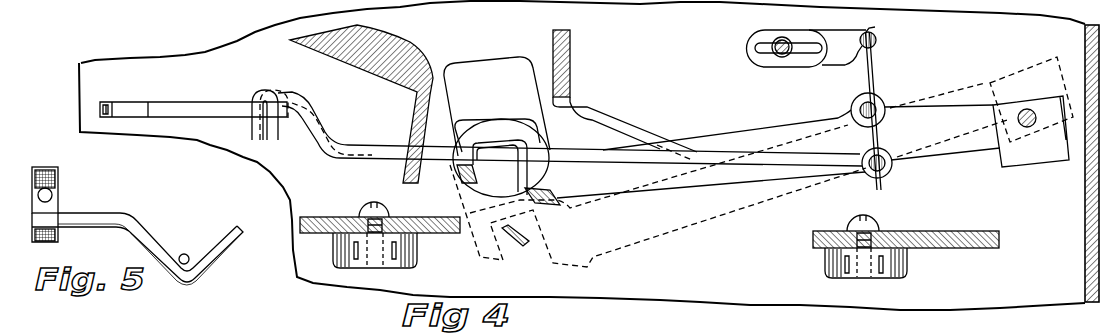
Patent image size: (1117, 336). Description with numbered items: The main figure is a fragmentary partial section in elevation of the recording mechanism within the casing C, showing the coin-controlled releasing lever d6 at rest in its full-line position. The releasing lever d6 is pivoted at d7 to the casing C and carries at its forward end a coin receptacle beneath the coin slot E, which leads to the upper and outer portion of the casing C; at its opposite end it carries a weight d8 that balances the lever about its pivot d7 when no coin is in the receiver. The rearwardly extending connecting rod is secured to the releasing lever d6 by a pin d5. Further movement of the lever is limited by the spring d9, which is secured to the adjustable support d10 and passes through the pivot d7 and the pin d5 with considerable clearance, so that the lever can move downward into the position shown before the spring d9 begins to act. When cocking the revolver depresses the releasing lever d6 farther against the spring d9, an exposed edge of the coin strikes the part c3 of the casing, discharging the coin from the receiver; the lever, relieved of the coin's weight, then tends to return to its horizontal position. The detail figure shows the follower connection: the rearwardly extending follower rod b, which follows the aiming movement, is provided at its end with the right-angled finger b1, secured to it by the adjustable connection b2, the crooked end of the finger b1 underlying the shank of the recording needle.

In FIG. 4, the coin slot E is at (502, 111).
In FIG. 4, the casing C is at (711, 128).
In FIG. 4, the part of the casing c3 is at (516, 241).
In FIG. 4, the pin d5 is at (886, 170).
In FIG. 4, the coin-controlled releasing lever d6 is at (920, 125).
In FIG. 4, the pivot d7 is at (851, 109).
In FIG. 4, the weight d8 is at (1028, 160).
In FIG. 4, the spring d9 is at (871, 78).
In FIG. 4, the adjustable support d10 is at (827, 60).
In FIG. 5, the follower rod b is at (51, 193).
In FIG. 5, the right-angled finger b1 is at (144, 238).
In FIG. 5, the adjustable connection b2 is at (58, 207).